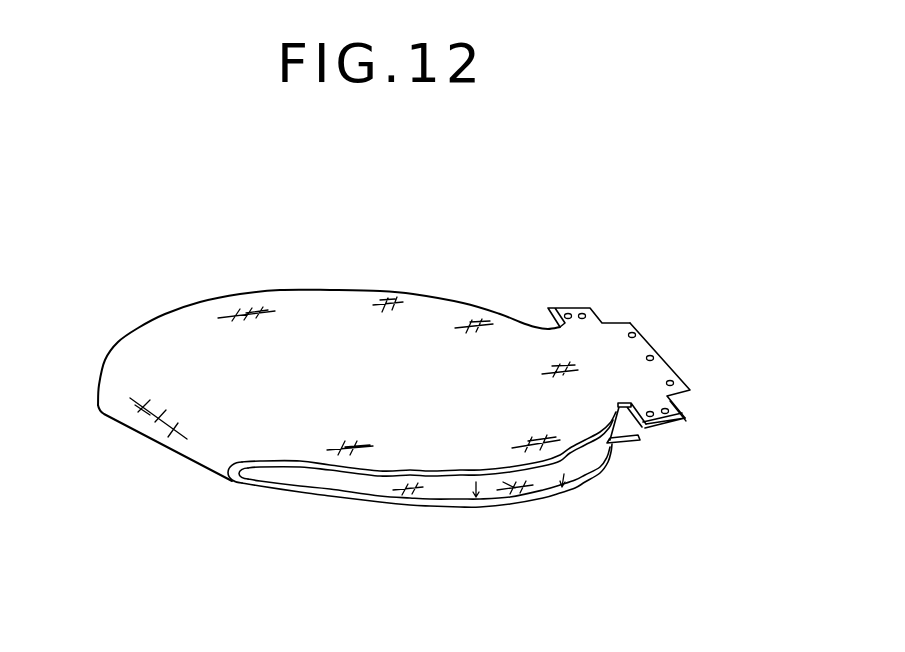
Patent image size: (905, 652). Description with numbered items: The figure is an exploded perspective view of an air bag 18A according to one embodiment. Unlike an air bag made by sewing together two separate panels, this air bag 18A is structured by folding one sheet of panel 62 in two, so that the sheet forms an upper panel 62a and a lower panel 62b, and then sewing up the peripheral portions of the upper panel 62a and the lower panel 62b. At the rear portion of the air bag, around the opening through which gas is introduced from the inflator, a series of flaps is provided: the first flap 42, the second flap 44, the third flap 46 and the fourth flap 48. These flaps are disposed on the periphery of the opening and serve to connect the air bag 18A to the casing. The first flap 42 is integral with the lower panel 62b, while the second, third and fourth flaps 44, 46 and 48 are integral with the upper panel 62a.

The panel 62 is at (161, 300).
The upper panel 62a is at (337, 313).
The lower panel 62b is at (398, 504).
The air bag 18A is at (652, 354).
The fourth flap 48 is at (573, 308).
The third flap 46 is at (638, 345).
The second flap 44 is at (684, 413).
The first flap 42 is at (633, 440).